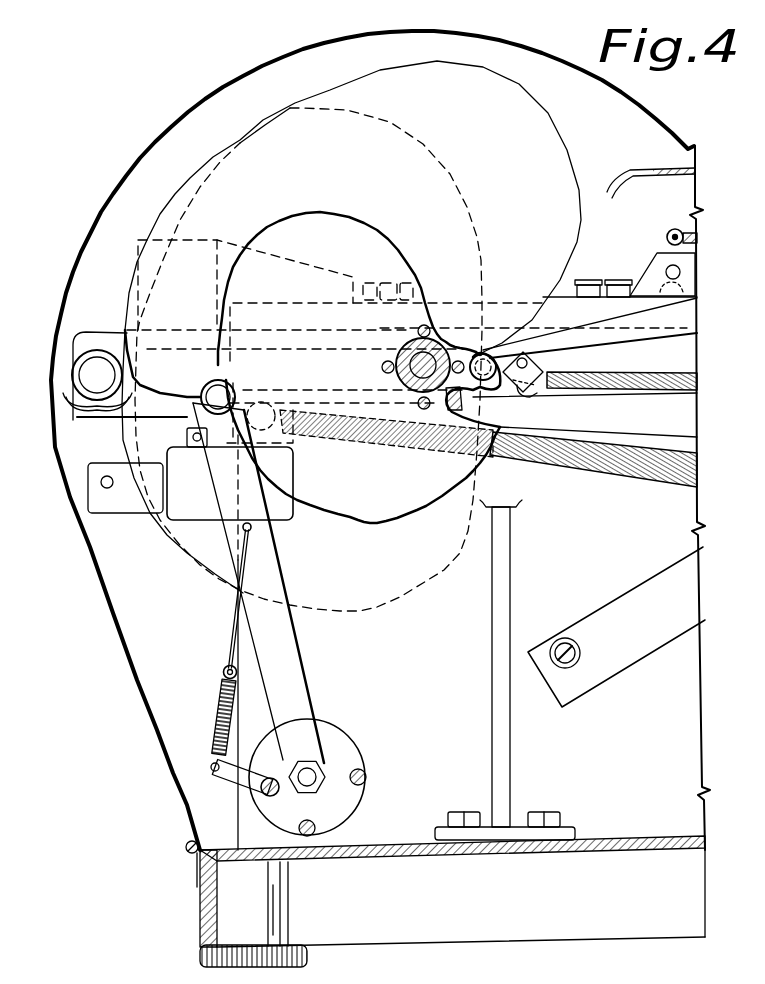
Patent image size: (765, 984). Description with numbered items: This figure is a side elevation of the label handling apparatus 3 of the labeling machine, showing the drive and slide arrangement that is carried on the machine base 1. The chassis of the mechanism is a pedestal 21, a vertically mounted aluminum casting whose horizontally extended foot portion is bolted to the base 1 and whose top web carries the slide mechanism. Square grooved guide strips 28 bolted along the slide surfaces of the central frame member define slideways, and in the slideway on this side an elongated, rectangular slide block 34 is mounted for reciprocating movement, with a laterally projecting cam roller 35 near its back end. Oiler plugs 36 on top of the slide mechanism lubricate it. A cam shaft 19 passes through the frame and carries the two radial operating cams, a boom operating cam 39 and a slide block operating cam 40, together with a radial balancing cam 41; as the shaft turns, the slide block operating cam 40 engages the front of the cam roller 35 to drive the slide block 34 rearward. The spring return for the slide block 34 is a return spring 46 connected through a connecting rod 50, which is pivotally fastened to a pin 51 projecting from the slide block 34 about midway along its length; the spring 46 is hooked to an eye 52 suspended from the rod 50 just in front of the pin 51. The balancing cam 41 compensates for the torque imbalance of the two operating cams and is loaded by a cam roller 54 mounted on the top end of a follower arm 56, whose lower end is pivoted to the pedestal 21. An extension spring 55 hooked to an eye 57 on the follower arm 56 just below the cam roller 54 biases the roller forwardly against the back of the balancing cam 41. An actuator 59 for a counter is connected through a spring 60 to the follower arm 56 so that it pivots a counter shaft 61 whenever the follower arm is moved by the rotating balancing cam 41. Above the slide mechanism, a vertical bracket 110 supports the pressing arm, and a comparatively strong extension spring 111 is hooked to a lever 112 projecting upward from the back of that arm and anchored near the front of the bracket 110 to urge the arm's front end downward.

The base 1 is at (705, 838).
The label handling apparatus 3 is at (102, 182).
The cam shaft 19 is at (413, 340).
The pedestal 21 is at (240, 822).
The square grooved guide strips 28 is at (697, 412).
The slide block 34 is at (85, 420).
The cam roller 35 is at (74, 373).
The oiler plugs 36 is at (617, 280).
The boom operating cam 39 is at (375, 610).
The slide block operating cam 40 is at (185, 182).
The balancing cam 41 is at (405, 520).
The return spring 46 is at (697, 381).
The connecting rod 50 is at (697, 311).
The pin 51 is at (497, 356).
The eye 52 is at (548, 358).
The cam roller 54 is at (216, 380).
The extension spring 55 is at (630, 472).
The follower arm 56 is at (240, 531).
The eye 57 is at (288, 460).
The actuator 59 is at (210, 772).
The spring 60 is at (220, 718).
The counter shaft 61 is at (262, 790).
The vertical bracket 110 is at (648, 265).
The extension spring 111 is at (698, 239).
The lever 112 is at (673, 229).